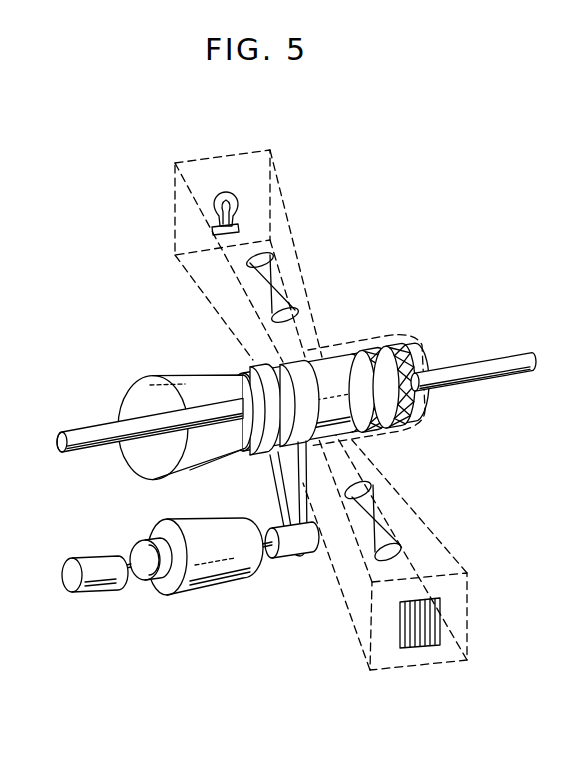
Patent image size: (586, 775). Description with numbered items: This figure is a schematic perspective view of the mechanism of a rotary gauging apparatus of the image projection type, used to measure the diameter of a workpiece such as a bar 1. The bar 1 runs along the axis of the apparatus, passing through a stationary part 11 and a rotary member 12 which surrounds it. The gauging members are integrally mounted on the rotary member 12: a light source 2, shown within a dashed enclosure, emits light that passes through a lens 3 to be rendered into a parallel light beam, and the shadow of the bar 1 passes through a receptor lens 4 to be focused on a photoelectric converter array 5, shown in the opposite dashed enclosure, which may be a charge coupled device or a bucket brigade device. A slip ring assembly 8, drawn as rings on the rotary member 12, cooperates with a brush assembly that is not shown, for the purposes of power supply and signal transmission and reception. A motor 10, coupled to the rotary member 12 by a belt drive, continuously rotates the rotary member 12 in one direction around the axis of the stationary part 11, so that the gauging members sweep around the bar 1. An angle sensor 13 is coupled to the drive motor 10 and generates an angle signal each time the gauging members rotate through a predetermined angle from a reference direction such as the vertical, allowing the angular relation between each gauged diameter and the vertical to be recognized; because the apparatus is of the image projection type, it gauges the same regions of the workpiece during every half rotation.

The bar 1 is at (480, 362).
The light source 2 is at (222, 193).
The lens 3 is at (272, 256).
The receptor lens 4 is at (370, 482).
The photoelectric converter array 5 is at (440, 620).
The slip ring assembly 8 is at (387, 336).
The motor 10 is at (207, 572).
The stationary part 11 is at (183, 385).
The rotary member 12 is at (237, 367).
The angle sensor 13 is at (95, 578).